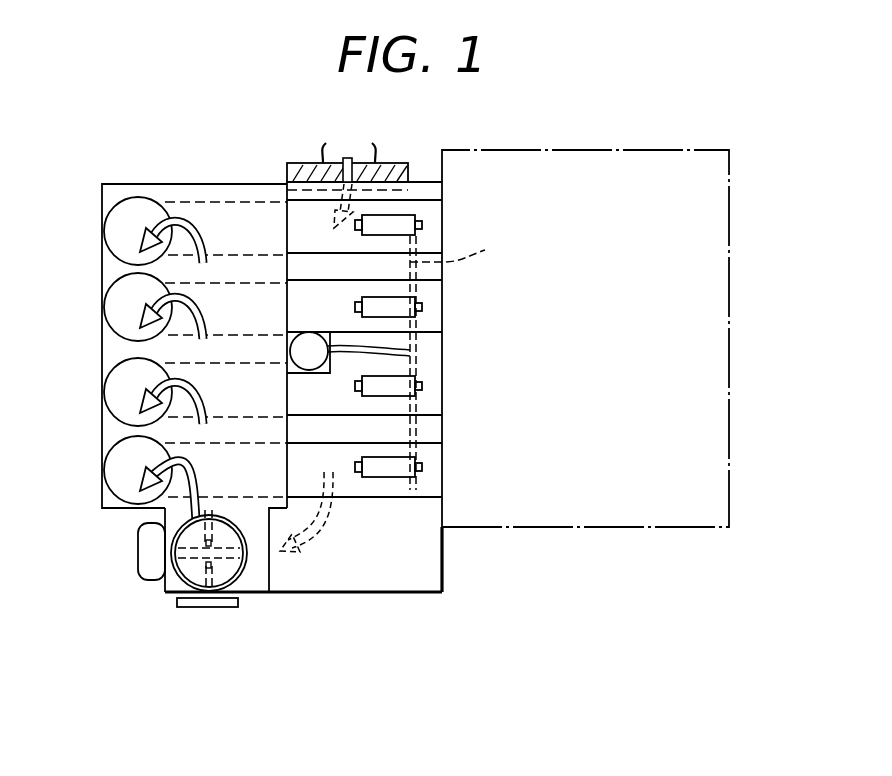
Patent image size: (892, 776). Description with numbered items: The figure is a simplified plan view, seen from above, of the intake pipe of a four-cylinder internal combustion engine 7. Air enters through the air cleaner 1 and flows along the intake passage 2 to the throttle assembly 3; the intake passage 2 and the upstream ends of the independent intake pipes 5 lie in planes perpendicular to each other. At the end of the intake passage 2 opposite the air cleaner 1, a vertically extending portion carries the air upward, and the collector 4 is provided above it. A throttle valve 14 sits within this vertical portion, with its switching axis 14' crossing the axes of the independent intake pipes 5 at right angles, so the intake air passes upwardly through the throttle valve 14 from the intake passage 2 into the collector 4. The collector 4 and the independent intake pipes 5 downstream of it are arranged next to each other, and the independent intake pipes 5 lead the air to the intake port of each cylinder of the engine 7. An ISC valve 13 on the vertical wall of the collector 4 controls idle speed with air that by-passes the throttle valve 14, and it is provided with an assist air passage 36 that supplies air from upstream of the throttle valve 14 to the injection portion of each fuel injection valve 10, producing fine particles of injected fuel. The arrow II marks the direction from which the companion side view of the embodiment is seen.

The air cleaner 1 is at (350, 182).
The intake passage 2 is at (405, 575).
The throttle assembly 3 is at (256, 580).
The collector 4 is at (195, 178).
The independent intake pipes 5 is at (102, 300).
The engine 7 is at (614, 512).
The fuel injection valve 10 is at (378, 474).
The ISC (Idle Speed Control) valve 13 is at (309, 360).
The throttle valve 14 is at (172, 568).
The switching axis 14' is at (215, 619).
The assist air passage 36 is at (467, 362).
The arrow II is at (347, 604).